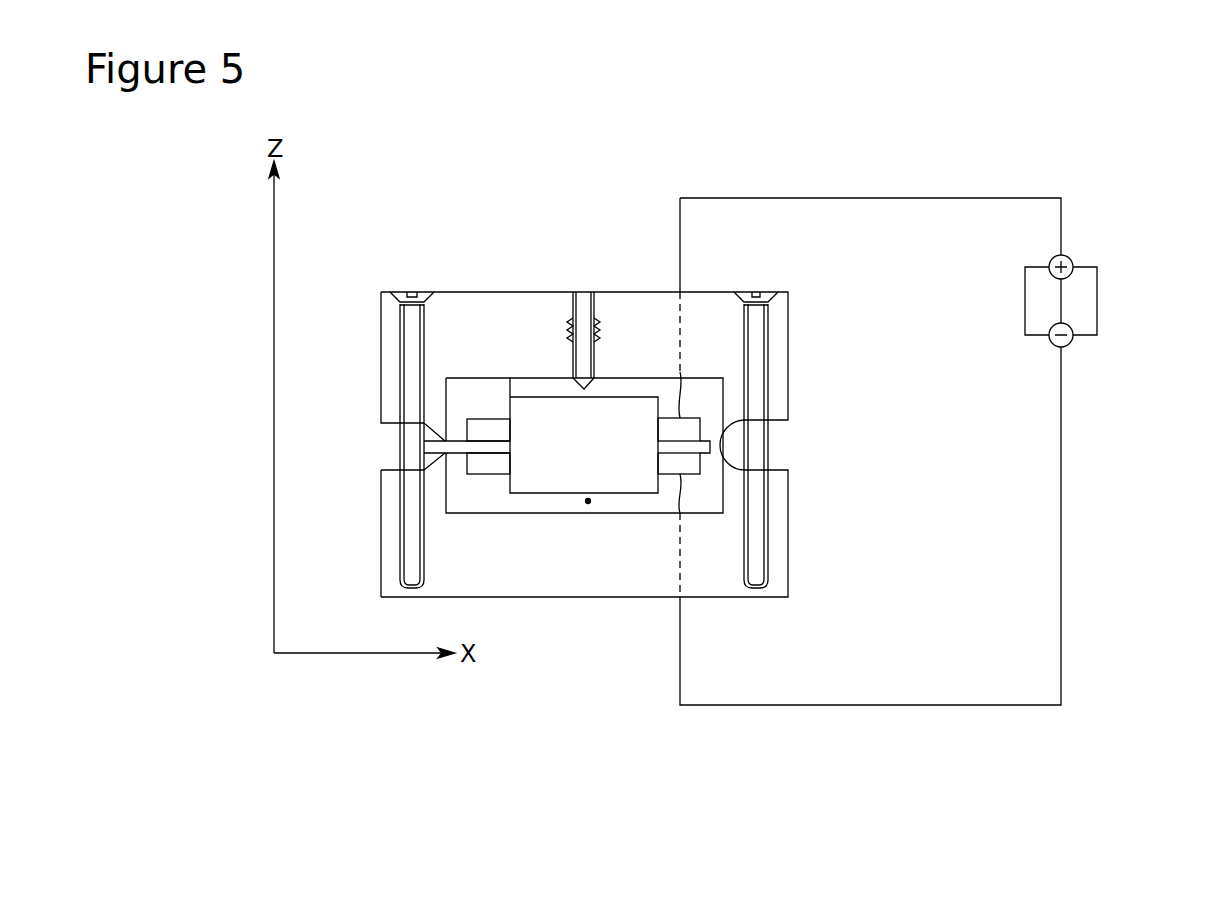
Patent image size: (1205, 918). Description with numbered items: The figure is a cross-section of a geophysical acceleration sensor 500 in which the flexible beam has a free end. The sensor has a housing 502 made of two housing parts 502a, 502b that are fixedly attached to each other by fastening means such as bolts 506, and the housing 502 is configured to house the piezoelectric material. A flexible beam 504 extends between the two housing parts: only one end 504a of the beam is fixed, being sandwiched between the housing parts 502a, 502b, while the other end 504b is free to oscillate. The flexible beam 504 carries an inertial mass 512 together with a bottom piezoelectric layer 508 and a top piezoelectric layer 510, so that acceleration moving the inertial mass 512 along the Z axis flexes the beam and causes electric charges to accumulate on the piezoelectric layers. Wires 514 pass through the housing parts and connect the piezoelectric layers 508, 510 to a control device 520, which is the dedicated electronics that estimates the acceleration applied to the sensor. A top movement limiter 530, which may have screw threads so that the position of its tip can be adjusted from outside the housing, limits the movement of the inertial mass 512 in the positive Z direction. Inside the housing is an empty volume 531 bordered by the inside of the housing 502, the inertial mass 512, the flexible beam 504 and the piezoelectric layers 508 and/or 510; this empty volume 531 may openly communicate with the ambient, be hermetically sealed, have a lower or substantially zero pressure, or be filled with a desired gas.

The geophysical acceleration sensor 500 is at (777, 135).
The housing 502 is at (652, 438).
The housing part 502a is at (779, 309).
The housing part 502b is at (780, 546).
The flexible beam 504 is at (581, 434).
The end of the flexible beam 504a is at (432, 447).
The end of the flexible beam 504b is at (710, 447).
The bolts 506 is at (413, 538).
The bottom piezoelectric layer 508 is at (478, 468).
The top piezoelectric layer 510 is at (478, 420).
The inertial mass 512 is at (553, 427).
The wires 514 is at (845, 198).
The control device 520 is at (1069, 257).
The top movement limiter 530 is at (581, 275).
The empty volume 531 is at (589, 505).